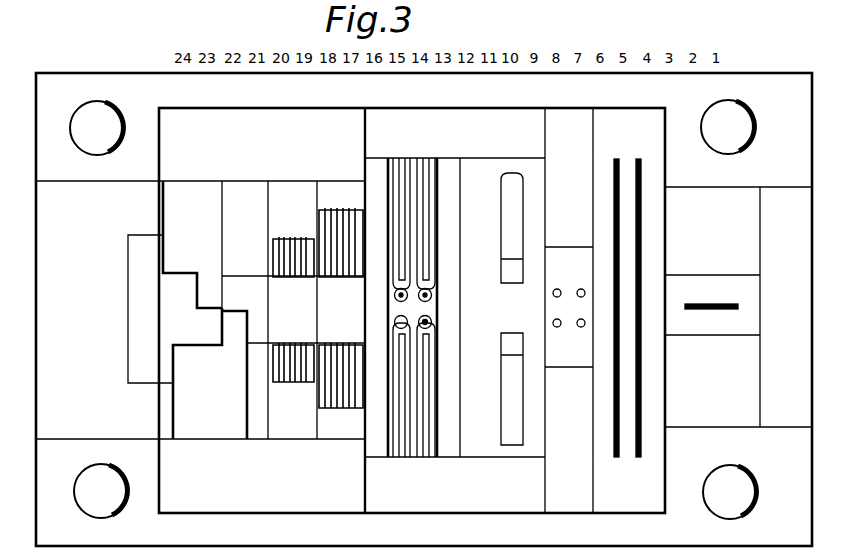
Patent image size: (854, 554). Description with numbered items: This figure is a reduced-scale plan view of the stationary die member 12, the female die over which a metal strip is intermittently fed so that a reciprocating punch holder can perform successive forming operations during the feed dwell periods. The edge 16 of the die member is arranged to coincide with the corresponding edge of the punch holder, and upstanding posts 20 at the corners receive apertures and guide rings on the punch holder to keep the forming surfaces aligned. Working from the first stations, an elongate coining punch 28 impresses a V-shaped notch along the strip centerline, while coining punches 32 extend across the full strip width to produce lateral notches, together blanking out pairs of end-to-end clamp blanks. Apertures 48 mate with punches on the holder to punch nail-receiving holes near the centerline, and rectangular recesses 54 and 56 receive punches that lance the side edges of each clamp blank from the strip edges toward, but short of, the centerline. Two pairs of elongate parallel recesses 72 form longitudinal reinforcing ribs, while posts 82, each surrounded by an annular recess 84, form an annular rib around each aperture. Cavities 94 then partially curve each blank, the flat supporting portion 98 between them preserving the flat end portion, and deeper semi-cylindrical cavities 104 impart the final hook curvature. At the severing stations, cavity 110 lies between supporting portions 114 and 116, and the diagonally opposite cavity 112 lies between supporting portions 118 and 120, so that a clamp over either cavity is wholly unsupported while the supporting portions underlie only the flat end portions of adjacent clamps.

The stationary die member 12 is at (91, 70).
The edge of the die member 16 is at (144, 73).
The upstanding posts 20 is at (85, 115).
The elongate coining punch 28 is at (708, 301).
The coining punches 32 is at (638, 162).
The apertures 48 is at (580, 289).
The rectangular recess 54 is at (512, 226).
The rectangular recess 56 is at (512, 405).
The elongate parallel recesses 72 is at (403, 460).
The posts 82 is at (431, 320).
The annular recess 84 is at (428, 328).
The cavities 94 is at (351, 208).
The flat supporting portion 98 is at (354, 319).
The cavities 104 is at (305, 237).
The cavity 110 is at (232, 330).
The cavity 112 is at (208, 290).
The supporting portion 114 is at (260, 336).
The supporting portion 116 is at (213, 325).
The supporting portion 118 is at (240, 286).
The supporting portion 120 is at (186, 288).